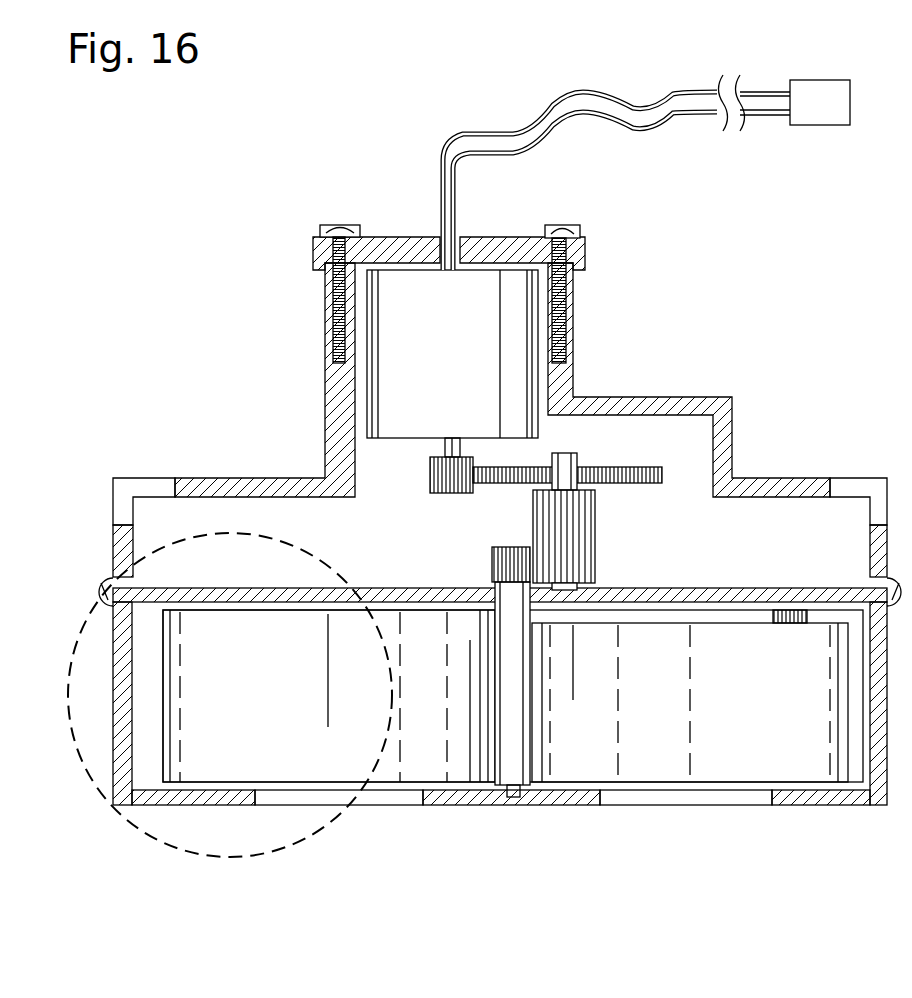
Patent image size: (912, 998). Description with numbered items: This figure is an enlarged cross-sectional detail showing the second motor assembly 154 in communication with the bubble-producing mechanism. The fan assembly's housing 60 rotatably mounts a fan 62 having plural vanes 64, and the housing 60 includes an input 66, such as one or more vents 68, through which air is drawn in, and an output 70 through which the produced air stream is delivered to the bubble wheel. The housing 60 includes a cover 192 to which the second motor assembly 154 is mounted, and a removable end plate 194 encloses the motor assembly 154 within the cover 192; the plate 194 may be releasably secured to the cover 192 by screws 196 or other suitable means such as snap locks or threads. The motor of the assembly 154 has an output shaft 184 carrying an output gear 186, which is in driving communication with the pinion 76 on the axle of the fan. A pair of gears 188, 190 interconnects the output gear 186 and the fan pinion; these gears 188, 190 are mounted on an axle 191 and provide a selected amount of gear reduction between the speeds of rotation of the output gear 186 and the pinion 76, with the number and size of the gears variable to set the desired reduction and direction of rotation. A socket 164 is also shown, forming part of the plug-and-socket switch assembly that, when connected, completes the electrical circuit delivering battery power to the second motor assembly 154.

The housing 60 is at (877, 805).
The fan 62 is at (110, 718).
The vanes 64 is at (237, 710).
The input 66 is at (410, 812).
The vents 68 is at (415, 806).
The output 70 is at (232, 860).
The pinion 76 is at (492, 575).
The second motor assembly 154 is at (429, 366).
The socket 164 is at (799, 116).
The output shaft 184 is at (440, 448).
The output gear 186 is at (430, 470).
The gear 188 is at (662, 474).
The gear 190 is at (595, 540).
The axle 191 is at (580, 460).
The cover 192 is at (780, 477).
The removable end plate 194 is at (538, 234).
The screws 196 is at (330, 300).